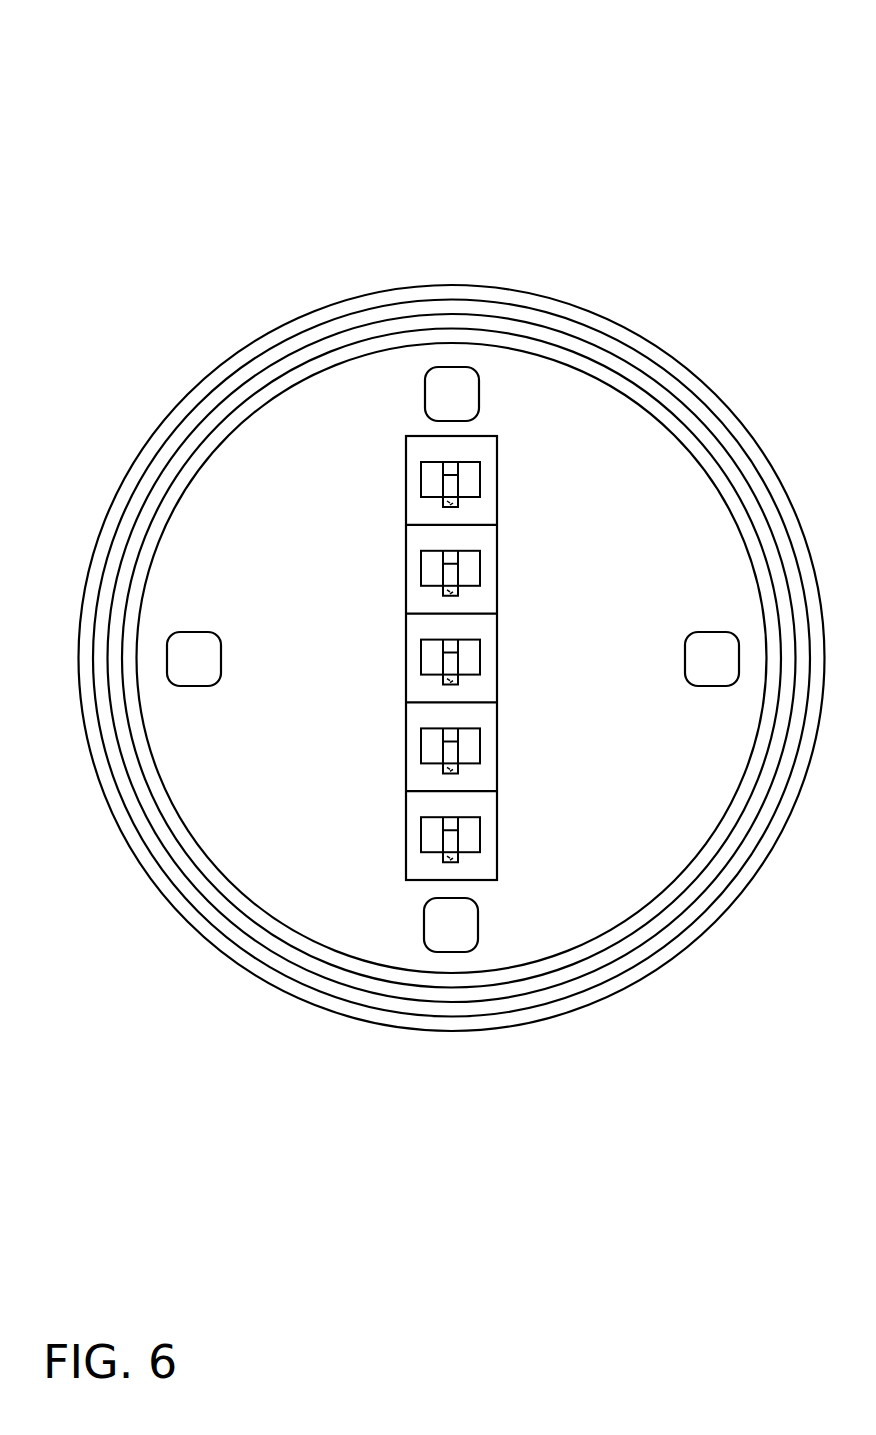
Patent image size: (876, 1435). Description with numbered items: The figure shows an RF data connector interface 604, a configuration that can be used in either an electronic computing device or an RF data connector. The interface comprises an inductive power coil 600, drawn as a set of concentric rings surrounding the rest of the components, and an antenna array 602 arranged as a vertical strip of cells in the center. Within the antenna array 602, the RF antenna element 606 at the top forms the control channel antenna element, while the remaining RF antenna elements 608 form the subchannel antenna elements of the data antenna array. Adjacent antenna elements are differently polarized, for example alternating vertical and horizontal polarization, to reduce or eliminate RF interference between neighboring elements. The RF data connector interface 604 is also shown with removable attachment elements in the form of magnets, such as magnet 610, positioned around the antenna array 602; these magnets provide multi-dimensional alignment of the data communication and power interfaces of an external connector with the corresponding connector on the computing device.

The inductive power coil 600 is at (285, 323).
The antenna array 602 is at (524, 841).
The RF data connector interface 604 is at (138, 49).
The RF antenna element 606 is at (489, 484).
The RF antenna elements 608 is at (400, 530).
The magnet 610 is at (193, 632).